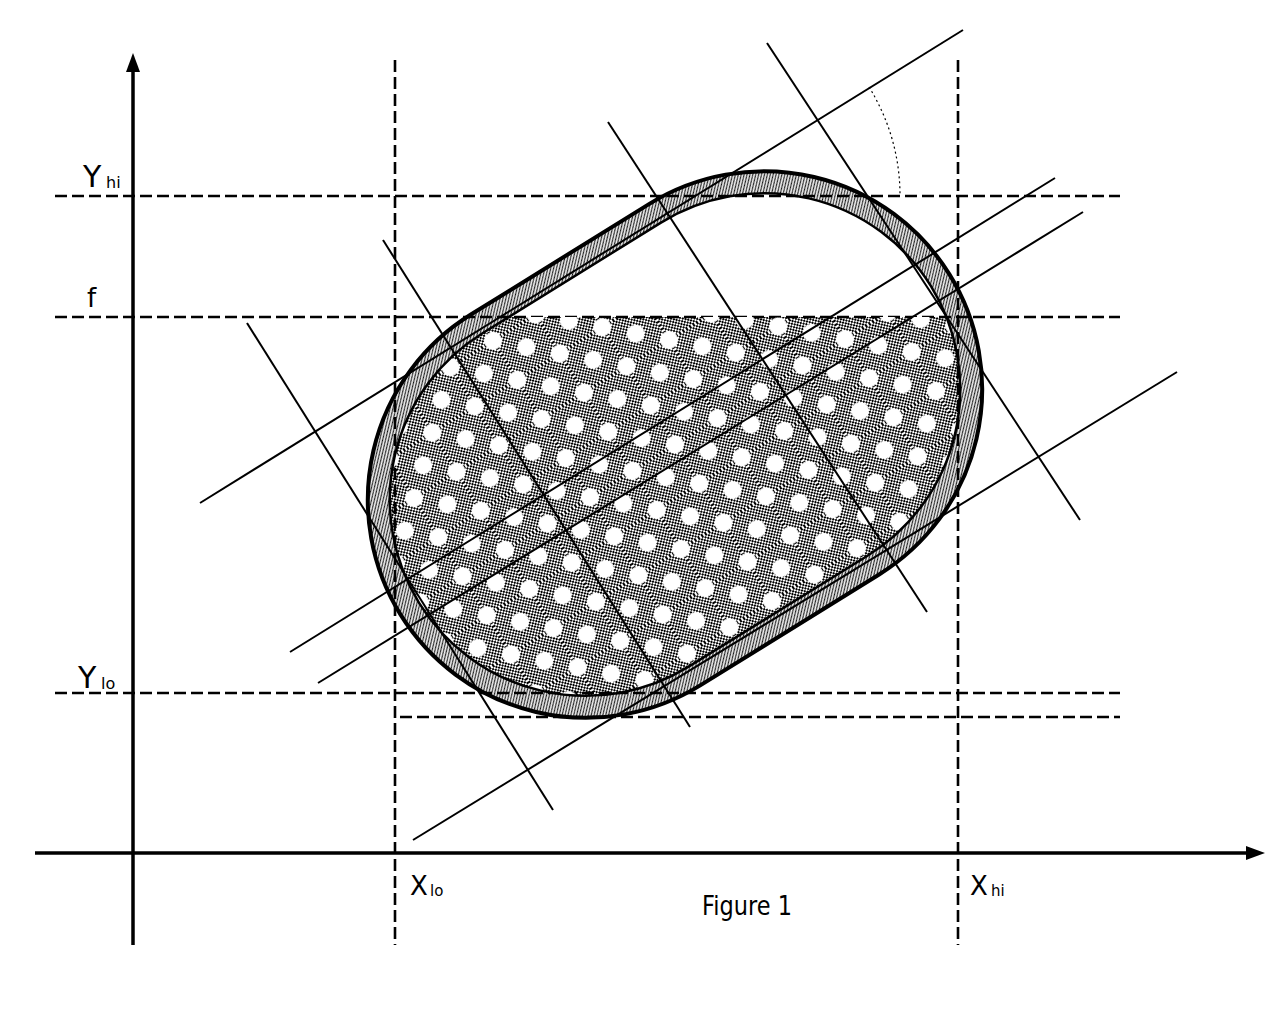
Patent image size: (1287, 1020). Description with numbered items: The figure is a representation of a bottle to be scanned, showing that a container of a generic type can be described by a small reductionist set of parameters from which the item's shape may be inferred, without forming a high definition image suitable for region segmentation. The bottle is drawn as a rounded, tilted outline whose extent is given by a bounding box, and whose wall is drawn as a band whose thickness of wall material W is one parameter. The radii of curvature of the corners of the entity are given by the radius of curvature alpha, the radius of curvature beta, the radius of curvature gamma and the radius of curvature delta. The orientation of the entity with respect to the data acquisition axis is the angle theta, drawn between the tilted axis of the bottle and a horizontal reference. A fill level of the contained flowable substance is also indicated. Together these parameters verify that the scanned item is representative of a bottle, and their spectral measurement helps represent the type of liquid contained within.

The radius of curvature of corner alpha is at (287, 368).
The radius of curvature of corner beta is at (255, 478).
The radius of curvature of corner gamma is at (933, 593).
The radius of curvature of corner delta is at (1000, 265).
The orientation of entity theta is at (870, 153).
The thickness of wall material W is at (1133, 693).